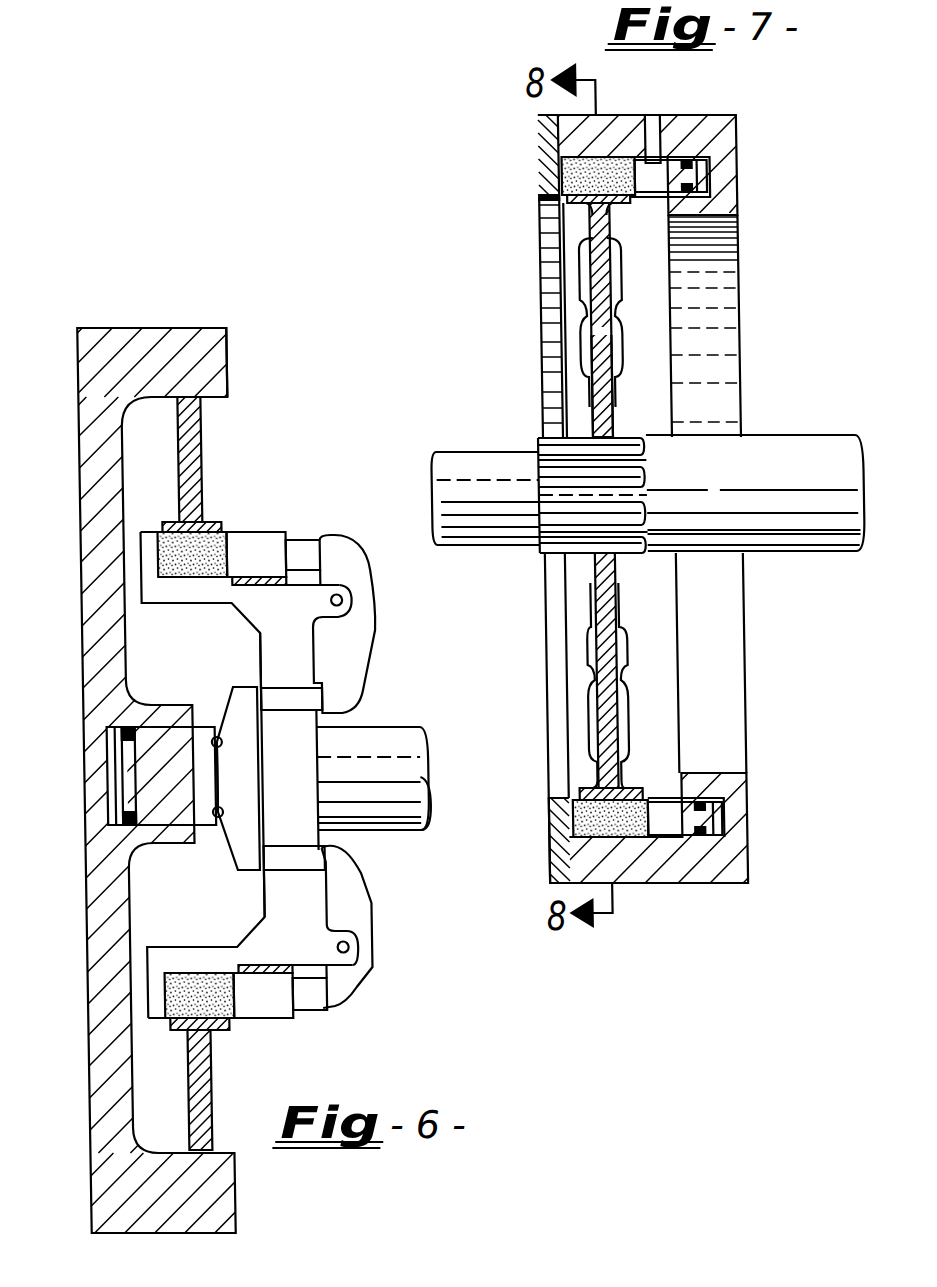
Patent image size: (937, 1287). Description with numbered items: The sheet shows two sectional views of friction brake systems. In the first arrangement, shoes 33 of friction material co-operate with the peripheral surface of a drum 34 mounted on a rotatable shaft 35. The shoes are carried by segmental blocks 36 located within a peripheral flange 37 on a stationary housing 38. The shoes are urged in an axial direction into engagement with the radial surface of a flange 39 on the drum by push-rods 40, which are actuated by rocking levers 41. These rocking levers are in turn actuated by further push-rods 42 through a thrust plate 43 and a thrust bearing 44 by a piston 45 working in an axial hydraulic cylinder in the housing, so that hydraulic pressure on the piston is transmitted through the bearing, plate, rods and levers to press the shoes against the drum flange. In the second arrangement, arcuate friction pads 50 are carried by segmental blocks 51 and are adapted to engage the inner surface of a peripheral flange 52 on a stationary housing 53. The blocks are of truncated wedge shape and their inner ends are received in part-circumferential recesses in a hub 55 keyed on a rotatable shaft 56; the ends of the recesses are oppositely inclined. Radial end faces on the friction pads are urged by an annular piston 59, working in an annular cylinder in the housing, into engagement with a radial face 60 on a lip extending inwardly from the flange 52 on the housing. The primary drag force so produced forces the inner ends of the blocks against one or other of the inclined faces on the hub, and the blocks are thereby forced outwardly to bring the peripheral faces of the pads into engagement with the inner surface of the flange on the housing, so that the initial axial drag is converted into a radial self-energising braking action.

In FIG. 6, the shoes 33 is at (186, 555).
In FIG. 6, the drum 34 is at (186, 572).
In FIG. 6, the rotatable shaft 35 is at (380, 805).
In FIG. 6, the segmental blocks 36 is at (178, 448).
In FIG. 6, the peripheral flange 37 is at (169, 375).
In FIG. 6, the stationary housing 38 is at (98, 430).
In FIG. 6, the flange 39 is at (141, 542).
In FIG. 6, the push-rods 40 is at (296, 558).
In FIG. 6, the rocking levers 41 is at (339, 660).
In FIG. 6, the push-rods 42 is at (294, 697).
In FIG. 6, the thrust plate 43 is at (219, 782).
In FIG. 6, the thrust bearing 44 is at (203, 738).
In FIG. 6, the piston 45 is at (164, 795).
In FIG. 7, the arcuate friction pads 50 is at (542, 193).
In FIG. 7, the segmental blocks 51 is at (596, 267).
In FIG. 7, the peripheral flange 52 is at (625, 143).
In FIG. 7, the stationary housing 53 is at (700, 312).
In FIG. 7, the hub 55 is at (605, 413).
In FIG. 7, the rotatable shaft 56 is at (815, 460).
In FIG. 7, the annular piston 59 is at (685, 172).
In FIG. 7, the radial face 60 is at (562, 163).